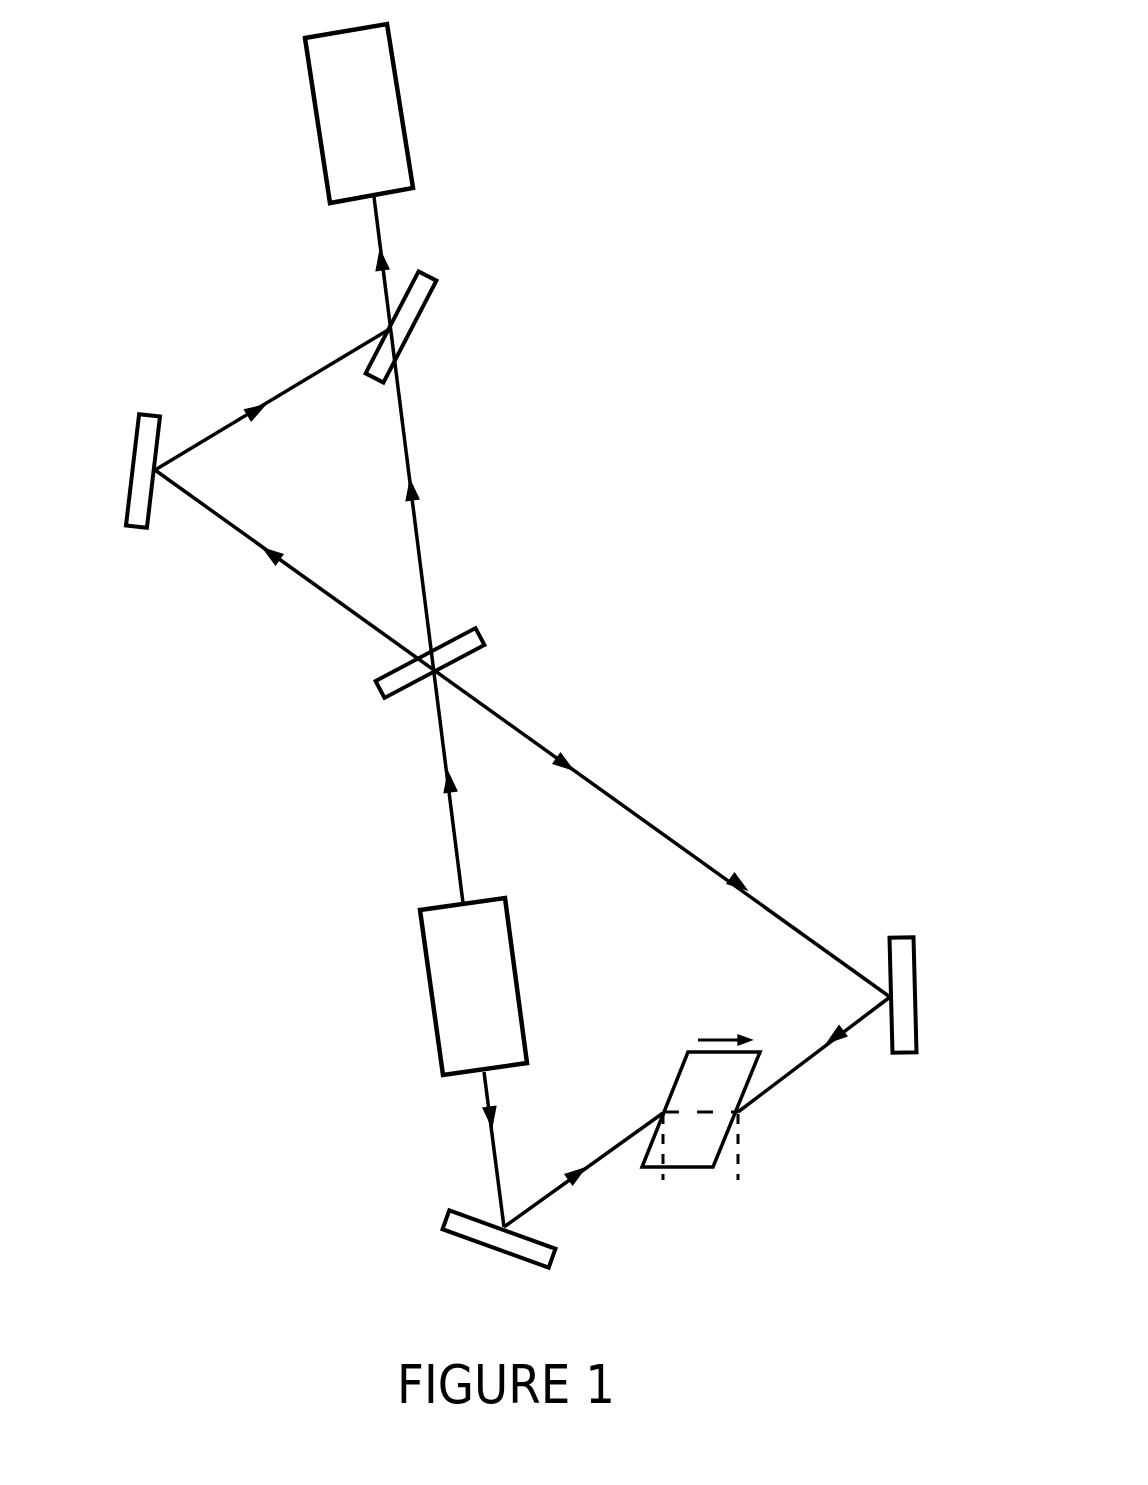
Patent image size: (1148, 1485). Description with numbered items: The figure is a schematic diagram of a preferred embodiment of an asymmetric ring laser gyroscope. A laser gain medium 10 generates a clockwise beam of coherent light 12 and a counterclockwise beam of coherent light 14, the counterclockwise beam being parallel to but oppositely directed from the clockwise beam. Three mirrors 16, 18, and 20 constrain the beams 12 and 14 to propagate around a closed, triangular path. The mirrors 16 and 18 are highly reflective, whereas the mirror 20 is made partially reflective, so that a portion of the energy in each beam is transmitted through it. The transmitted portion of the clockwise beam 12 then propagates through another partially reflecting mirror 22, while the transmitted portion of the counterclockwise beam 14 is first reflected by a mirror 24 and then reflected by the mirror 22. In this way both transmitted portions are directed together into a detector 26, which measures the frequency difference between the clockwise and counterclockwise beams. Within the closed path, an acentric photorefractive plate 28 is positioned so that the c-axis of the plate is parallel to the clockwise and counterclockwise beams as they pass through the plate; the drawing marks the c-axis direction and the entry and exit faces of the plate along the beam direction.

The laser gain medium 10 is at (433, 1012).
The clockwise beam of coherent light 12 is at (452, 832).
The counterclockwise beam of coherent light 14 is at (494, 1170).
The mirror 16 is at (495, 1252).
The mirror 18 is at (890, 965).
The partially reflective mirror 20 is at (447, 640).
The partially reflecting mirror 22 is at (432, 297).
The mirror 24 is at (131, 455).
The detector 26 is at (402, 118).
The acentric photorefractive plate 28 is at (670, 1090).